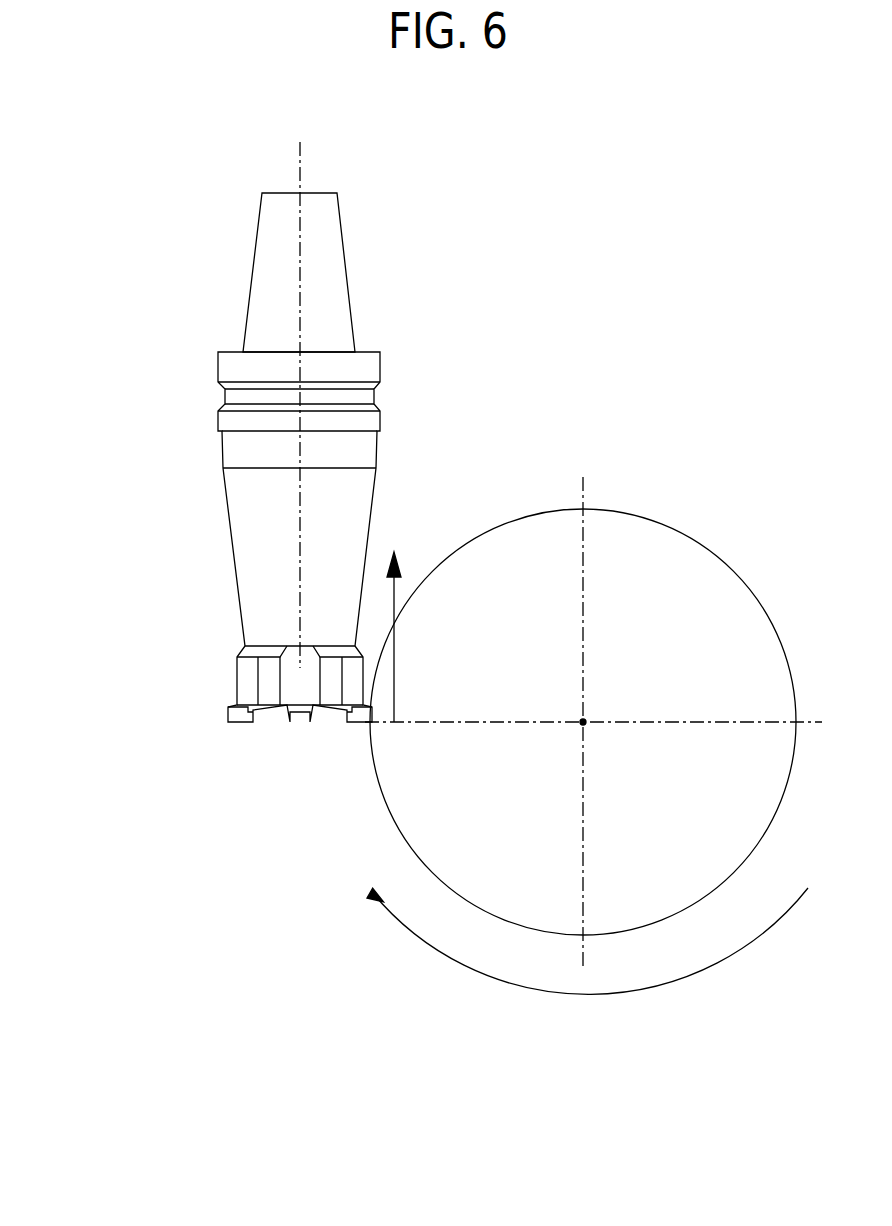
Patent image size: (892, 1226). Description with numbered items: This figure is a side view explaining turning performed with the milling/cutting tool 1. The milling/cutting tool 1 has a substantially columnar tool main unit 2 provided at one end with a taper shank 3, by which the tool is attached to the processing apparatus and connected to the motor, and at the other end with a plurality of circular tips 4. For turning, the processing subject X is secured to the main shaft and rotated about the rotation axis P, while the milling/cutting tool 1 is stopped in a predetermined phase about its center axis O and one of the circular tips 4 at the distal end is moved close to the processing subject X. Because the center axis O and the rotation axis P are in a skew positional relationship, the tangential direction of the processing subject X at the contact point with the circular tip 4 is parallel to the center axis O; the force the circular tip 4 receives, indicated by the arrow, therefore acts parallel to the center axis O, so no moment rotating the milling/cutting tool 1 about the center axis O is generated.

The milling/cutting tool 1 is at (138, 305).
The tool main unit 2 is at (220, 459).
The taper shank 3 is at (248, 273).
The circular tips 4 is at (270, 725).
The center axis O is at (300, 165).
The processing subject X is at (697, 538).
The rotation axis P is at (583, 722).